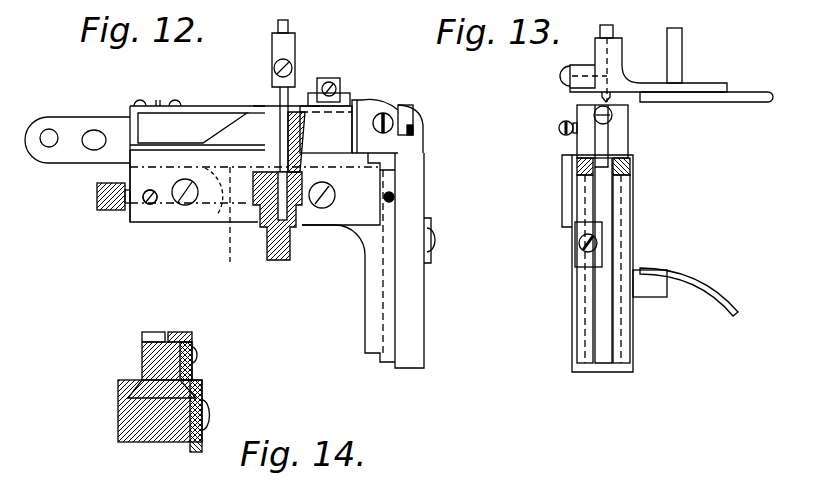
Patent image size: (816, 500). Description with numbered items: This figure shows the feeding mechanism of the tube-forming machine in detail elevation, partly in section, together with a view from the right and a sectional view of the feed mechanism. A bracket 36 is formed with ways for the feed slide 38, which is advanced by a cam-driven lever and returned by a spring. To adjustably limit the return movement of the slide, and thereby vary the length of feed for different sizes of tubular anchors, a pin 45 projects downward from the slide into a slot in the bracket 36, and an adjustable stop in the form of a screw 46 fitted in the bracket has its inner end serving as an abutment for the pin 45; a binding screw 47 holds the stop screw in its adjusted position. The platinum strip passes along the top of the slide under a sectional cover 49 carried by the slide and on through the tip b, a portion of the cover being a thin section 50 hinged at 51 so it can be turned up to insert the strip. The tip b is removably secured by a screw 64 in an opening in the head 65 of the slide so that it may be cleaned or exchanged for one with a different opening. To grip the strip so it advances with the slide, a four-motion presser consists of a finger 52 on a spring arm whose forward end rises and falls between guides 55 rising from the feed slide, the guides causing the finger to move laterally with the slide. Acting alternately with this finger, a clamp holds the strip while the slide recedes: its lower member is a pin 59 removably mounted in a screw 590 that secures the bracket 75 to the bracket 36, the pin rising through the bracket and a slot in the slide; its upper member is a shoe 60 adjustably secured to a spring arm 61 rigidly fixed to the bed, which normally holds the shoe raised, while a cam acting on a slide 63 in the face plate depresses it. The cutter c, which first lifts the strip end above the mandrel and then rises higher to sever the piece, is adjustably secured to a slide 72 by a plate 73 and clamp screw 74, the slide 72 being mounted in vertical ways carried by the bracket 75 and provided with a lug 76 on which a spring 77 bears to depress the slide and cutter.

In FIG. 12, the bracket 36 is at (262, 187).
In FIG. 14, the bracket 36 is at (150, 430).
In FIG. 14, the feed slide 38 is at (142, 360).
In FIG. 12, the pin 45 is at (220, 216).
In FIG. 12, the screw 46 is at (108, 210).
In FIG. 12, the binding screw 47 is at (150, 206).
In FIG. 12, the sectional cover 49 is at (157, 104).
In FIG. 14, the sectional cover 49 is at (142, 337).
In FIG. 12, the thin section 50 is at (242, 112).
In FIG. 14, the thin section 50 is at (182, 332).
In FIG. 12, the hinge 51 is at (192, 128).
In FIG. 12, the finger 52 is at (345, 100).
In FIG. 12, the guides 55 is at (312, 94).
In FIG. 12, the pin 59 is at (280, 150).
In FIG. 12, the screw 590 is at (280, 260).
In FIG. 12, the shoe 60 is at (283, 100).
In FIG. 13, the shoe 60 is at (600, 98).
In FIG. 12, the spring arm 61 is at (272, 52).
In FIG. 13, the spring arm 61 is at (628, 62).
In FIG. 13, the slide 63 is at (682, 55).
In FIG. 12, the screw 64 is at (388, 114).
In FIG. 13, the screw 64 is at (559, 128).
In FIG. 13, the head 65 is at (628, 140).
In FIG. 12, the slide 72 is at (410, 318).
In FIG. 13, the slide 72 is at (578, 306).
In FIG. 12, the plate 73 is at (433, 258).
In FIG. 13, the plate 73 is at (580, 255).
In FIG. 12, the clamp screw 74 is at (433, 240).
In FIG. 13, the clamp screw 74 is at (580, 242).
In FIG. 12, the bracket 75 is at (362, 268).
In FIG. 13, the lug 76 is at (656, 297).
In FIG. 13, the spring 77 is at (706, 274).
In FIG. 12, the tip b is at (412, 110).
In FIG. 13, the tip b is at (605, 128).
In FIG. 12, the cutter c is at (425, 135).
In FIG. 13, the cutter c is at (595, 143).